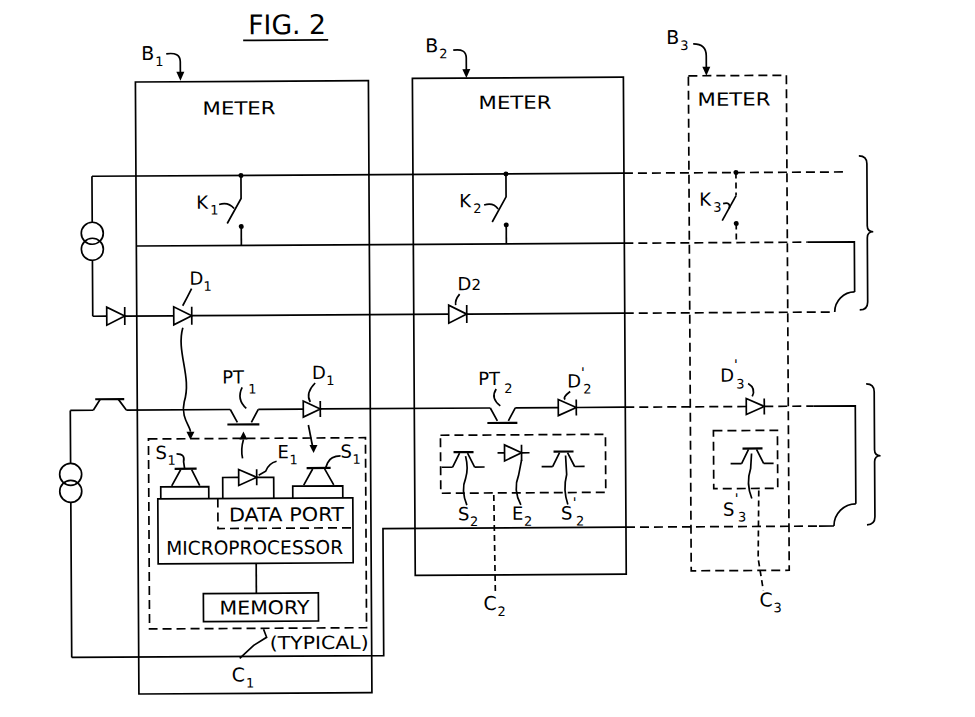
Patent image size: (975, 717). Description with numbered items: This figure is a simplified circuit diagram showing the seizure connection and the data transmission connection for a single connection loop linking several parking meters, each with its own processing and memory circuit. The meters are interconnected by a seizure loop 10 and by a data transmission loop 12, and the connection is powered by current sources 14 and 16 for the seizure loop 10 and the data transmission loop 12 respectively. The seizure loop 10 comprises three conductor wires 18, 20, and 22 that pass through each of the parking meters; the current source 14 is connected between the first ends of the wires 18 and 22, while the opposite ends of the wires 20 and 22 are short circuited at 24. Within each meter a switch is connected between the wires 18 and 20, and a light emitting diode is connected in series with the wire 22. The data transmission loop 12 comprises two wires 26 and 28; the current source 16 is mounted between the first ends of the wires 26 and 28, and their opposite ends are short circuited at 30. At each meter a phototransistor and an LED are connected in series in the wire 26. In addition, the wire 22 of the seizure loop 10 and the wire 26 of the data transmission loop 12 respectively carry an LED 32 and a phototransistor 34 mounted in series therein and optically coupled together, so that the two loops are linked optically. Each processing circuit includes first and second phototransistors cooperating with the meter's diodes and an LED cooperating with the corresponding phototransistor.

The seizure loop 10 is at (880, 233).
The data transmission loop 12 is at (885, 454).
The current source 14 is at (108, 222).
The current source 16 is at (60, 467).
The conductor wire 18 is at (203, 174).
The conductor wire 20 is at (190, 244).
The conductor wire 22 is at (306, 314).
The short circuit 24 is at (836, 316).
The wire 26 is at (386, 411).
The wire 28 is at (396, 527).
The short circuit 30 is at (840, 530).
The light emitting diode 32 is at (115, 326).
The phototransistor 34 is at (97, 392).